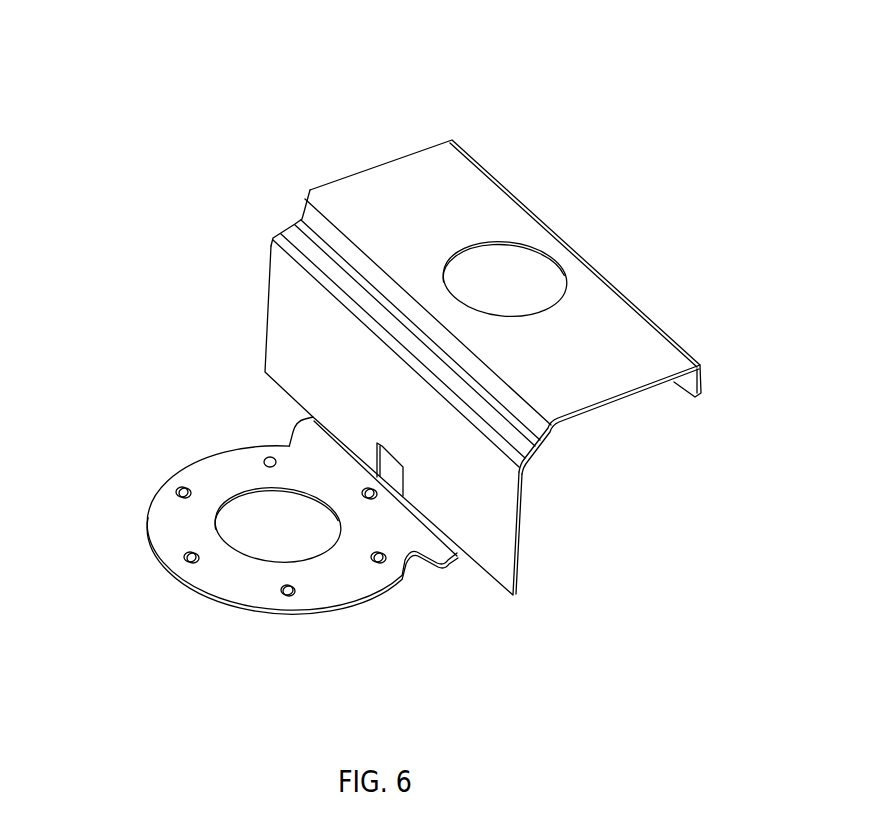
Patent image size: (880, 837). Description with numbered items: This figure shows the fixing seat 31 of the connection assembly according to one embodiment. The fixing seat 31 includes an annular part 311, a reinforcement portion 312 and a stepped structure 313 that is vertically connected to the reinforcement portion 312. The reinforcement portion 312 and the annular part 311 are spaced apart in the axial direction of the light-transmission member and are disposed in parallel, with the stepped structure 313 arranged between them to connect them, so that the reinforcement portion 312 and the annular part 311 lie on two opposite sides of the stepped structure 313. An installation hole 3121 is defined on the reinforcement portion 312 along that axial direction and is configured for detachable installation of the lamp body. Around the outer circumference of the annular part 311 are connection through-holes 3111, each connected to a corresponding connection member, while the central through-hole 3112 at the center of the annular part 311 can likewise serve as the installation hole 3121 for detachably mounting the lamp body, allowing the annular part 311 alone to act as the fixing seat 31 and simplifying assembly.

The fixing seat 31 is at (377, 127).
The annular part 311 is at (233, 473).
The connection through-holes 3111 is at (187, 555).
The central through-hole 3112 is at (267, 518).
The reinforcement portion 312 is at (583, 363).
The installation hole 3121 is at (503, 283).
The stepped structure 313 is at (493, 505).